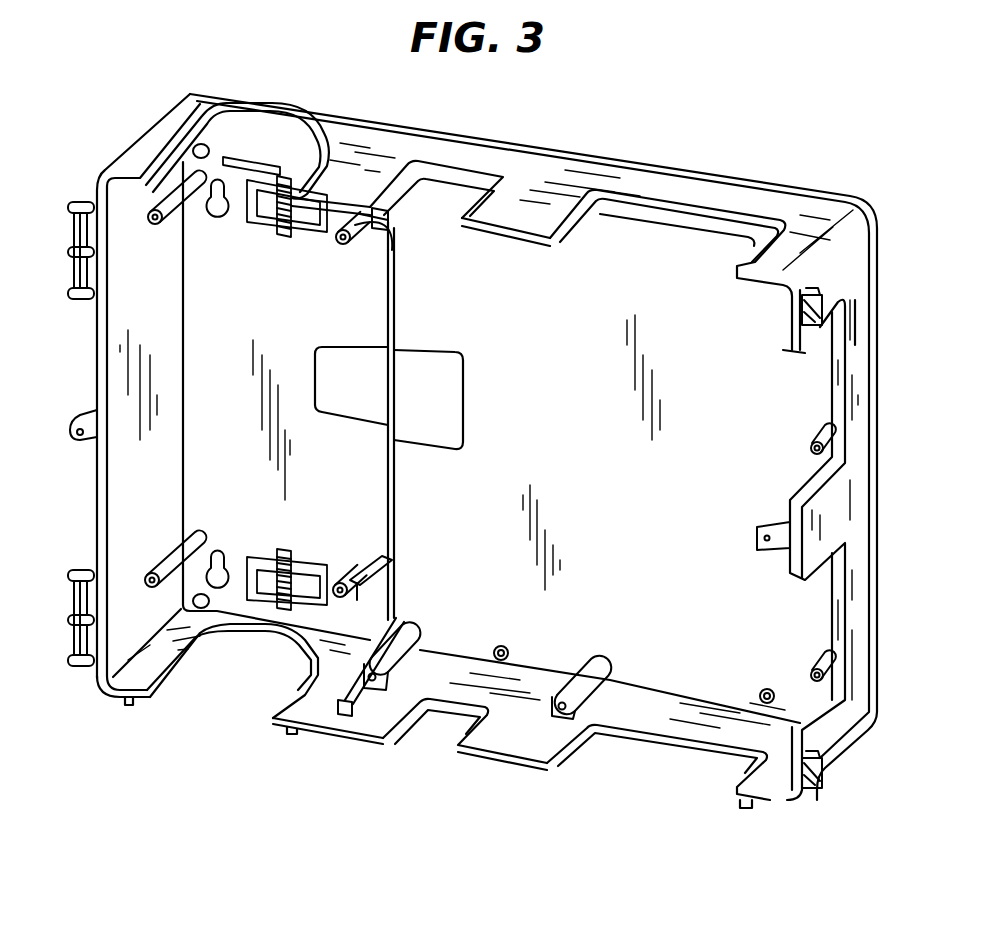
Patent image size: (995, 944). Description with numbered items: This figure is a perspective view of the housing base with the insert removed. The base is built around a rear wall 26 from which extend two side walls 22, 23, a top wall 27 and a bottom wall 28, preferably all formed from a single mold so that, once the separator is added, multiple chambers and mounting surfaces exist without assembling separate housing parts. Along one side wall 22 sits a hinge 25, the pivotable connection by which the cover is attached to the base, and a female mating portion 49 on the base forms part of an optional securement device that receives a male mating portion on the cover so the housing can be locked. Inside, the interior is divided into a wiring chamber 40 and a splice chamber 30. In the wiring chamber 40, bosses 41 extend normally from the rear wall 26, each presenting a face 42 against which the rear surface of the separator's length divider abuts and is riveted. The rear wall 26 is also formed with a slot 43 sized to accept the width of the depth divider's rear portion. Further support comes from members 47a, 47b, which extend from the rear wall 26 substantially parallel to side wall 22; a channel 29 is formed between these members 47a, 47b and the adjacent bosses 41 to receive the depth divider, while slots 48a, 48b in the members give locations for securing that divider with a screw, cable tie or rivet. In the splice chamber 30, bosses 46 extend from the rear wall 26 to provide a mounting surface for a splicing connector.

The side wall 22 is at (145, 478).
The side wall 23 is at (845, 506).
The hinge 25 is at (82, 203).
The rear wall 26 is at (614, 459).
The top wall 27 is at (821, 212).
The bottom wall 28 is at (512, 778).
The channel 29 is at (362, 702).
The splice chamber 30 is at (126, 456).
The wiring chamber 40 is at (517, 270).
The bosses 41 is at (412, 630).
The face 42 is at (384, 682).
The slot 43 is at (394, 508).
The bosses 46 is at (153, 224).
The member 47a is at (378, 255).
The member 47b is at (392, 578).
The slot 48a is at (385, 231).
The slot 48b is at (345, 720).
The female mating portion 49 is at (757, 538).